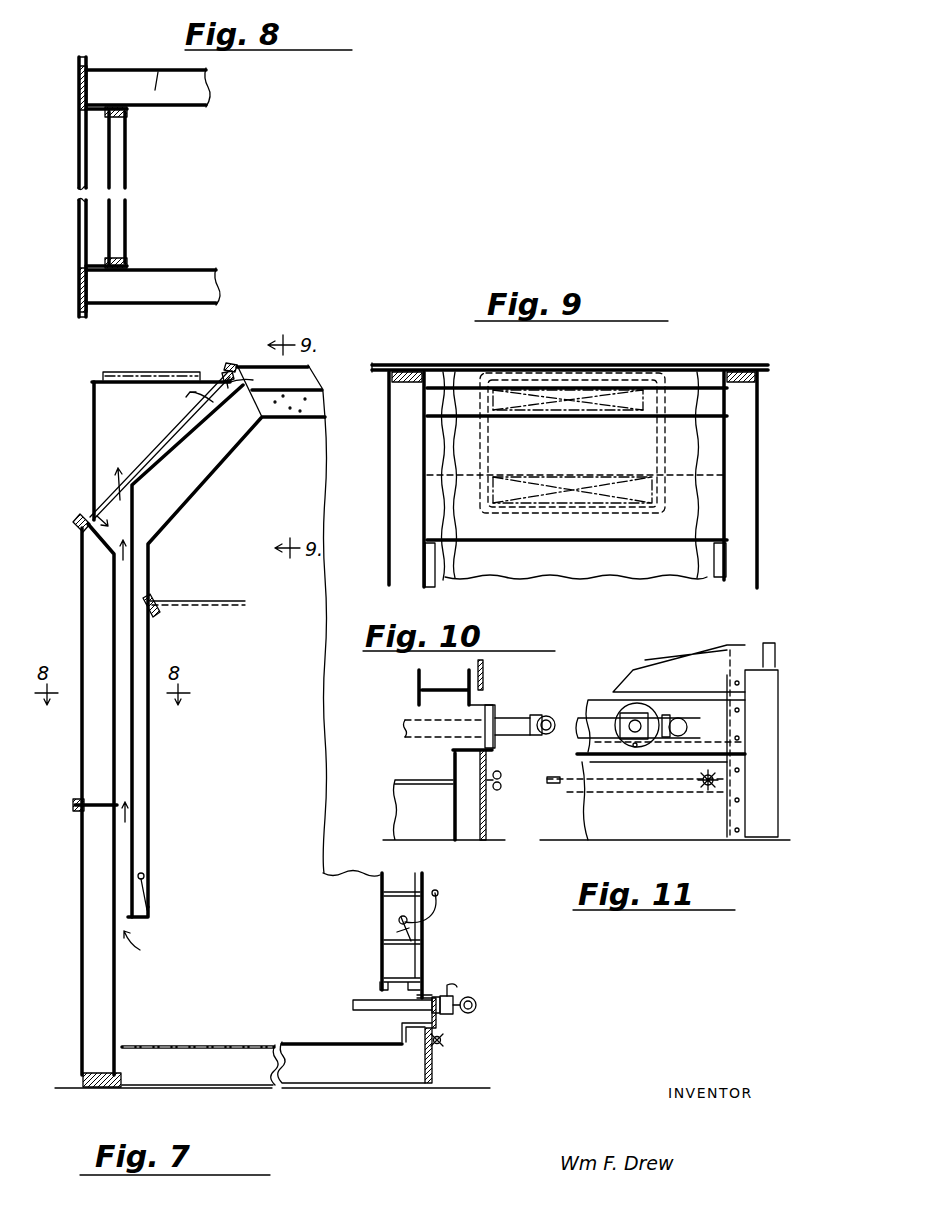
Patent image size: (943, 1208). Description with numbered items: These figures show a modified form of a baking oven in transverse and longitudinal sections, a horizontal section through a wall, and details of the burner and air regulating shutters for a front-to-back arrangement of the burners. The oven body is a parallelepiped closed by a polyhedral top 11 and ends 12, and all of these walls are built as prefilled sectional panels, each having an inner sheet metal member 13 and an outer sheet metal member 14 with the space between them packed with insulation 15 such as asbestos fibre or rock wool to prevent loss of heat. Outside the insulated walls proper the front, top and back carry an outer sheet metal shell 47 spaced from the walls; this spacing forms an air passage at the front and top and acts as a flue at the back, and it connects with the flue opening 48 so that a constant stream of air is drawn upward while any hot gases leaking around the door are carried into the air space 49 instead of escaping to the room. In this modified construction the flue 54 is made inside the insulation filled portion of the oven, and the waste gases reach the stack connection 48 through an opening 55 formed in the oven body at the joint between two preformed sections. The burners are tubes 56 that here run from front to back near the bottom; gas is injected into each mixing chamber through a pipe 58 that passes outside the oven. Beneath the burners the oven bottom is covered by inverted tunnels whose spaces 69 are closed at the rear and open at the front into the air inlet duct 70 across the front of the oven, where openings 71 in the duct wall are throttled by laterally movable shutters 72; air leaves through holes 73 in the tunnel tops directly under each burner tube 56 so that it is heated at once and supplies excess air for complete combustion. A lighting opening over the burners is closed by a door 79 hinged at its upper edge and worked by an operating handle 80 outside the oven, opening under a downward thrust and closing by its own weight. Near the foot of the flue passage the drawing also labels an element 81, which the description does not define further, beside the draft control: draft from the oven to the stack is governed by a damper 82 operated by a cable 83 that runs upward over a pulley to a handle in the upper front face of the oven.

In FIG. 7, the polyhedral top 11 is at (252, 365).
In FIG. 9, the polyhedral top 11 is at (458, 362).
In FIG. 7, the end 12 is at (272, 1034).
In FIG. 8, the inner sheet metal member 13 is at (186, 108).
In FIG. 7, the inner sheet metal member 13 is at (237, 447).
In FIG. 9, the inner sheet metal member 13 is at (412, 587).
In FIG. 8, the outer sheet metal member 14 is at (207, 72).
In FIG. 7, the outer sheet metal member 14 is at (82, 575).
In FIG. 9, the outer sheet metal member 14 is at (392, 552).
In FIG. 8, the insulation 15 is at (198, 82).
In FIG. 7, the insulation 15 is at (98, 622).
In FIG. 9, the insulation 15 is at (402, 515).
In FIG. 7, the outer sheet metal shell 47 is at (268, 364).
In FIG. 9, the outer sheet metal shell 47 is at (500, 364).
In FIG. 10, the outer sheet metal shell 47 is at (485, 697).
In FIG. 11, the outer sheet metal shell 47 is at (610, 700).
In FIG. 7, the flue opening 48 is at (164, 378).
In FIG. 7, the air space 49 is at (322, 388).
In FIG. 9, the air space 49 is at (672, 378).
In FIG. 8, the flue 54 is at (117, 172).
In FIG. 7, the flue 54 is at (123, 760).
In FIG. 7, the opening 55 is at (92, 517).
In FIG. 7, the burner tube 56 is at (353, 1003).
In FIG. 10, the burner tube 56 is at (436, 725).
In FIG. 7, the pipe 58 is at (226, 1050).
In FIG. 7, the space under the tunnels 69 is at (355, 1053).
In FIG. 7, the air inlet duct 70 is at (415, 1063).
In FIG. 10, the air inlet duct 70 is at (470, 805).
In FIG. 7, the opening 71 is at (432, 1030).
In FIG. 10, the opening 71 is at (492, 750).
In FIG. 11, the opening 71 is at (605, 755).
In FIG. 7, the shutter 72 is at (441, 1040).
In FIG. 10, the shutter 72 is at (492, 767).
In FIG. 11, the shutter 72 is at (580, 795).
In FIG. 7, the hole 73 is at (255, 1045).
In FIG. 7, the door 79 is at (380, 930).
In FIG. 7, the operating handle 80 is at (440, 893).
In FIG. 7, the outlet 81 is at (151, 947).
In FIG. 7, the damper 82 is at (130, 918).
In FIG. 7, the cable 83 is at (150, 830).